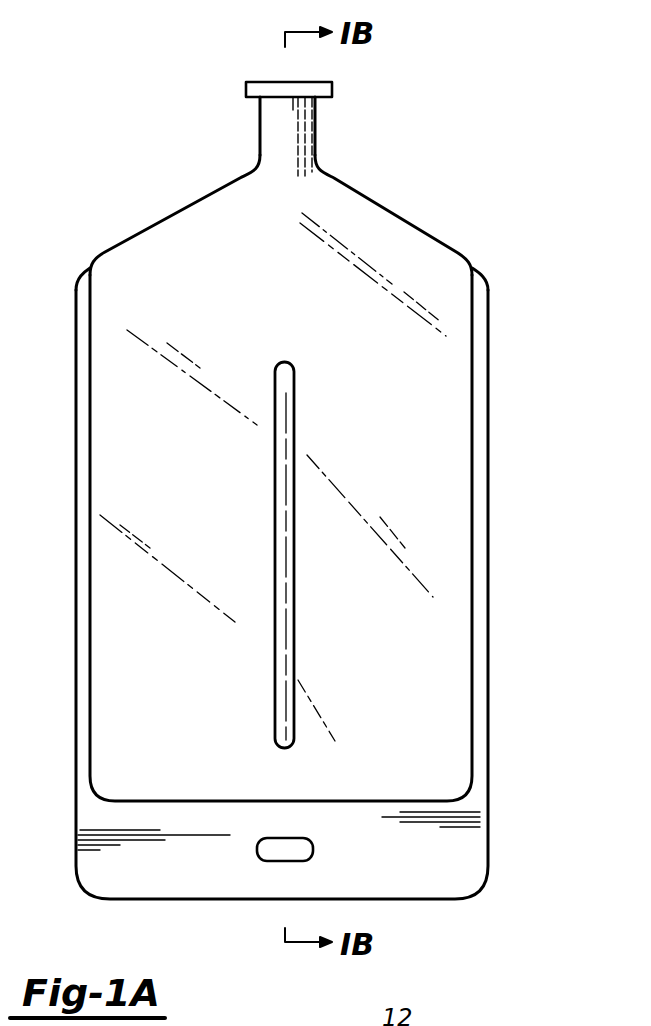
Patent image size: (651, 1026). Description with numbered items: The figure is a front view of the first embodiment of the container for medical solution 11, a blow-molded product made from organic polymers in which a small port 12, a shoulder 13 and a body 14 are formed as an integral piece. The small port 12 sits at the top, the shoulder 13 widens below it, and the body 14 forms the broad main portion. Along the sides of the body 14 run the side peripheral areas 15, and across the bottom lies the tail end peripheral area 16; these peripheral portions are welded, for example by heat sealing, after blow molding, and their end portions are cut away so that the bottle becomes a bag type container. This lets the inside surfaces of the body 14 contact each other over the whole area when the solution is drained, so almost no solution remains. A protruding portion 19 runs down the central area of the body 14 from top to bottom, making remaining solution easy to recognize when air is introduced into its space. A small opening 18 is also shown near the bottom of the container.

The container for medical solution 11 is at (308, 514).
The small port 12 is at (313, 117).
The shoulder 13 is at (365, 221).
The body 14 is at (432, 452).
The side peripheral areas 15 is at (76, 585).
The tail end peripheral area 16 is at (187, 900).
The aperture 18 is at (313, 856).
The protruding portion 19 is at (270, 478).